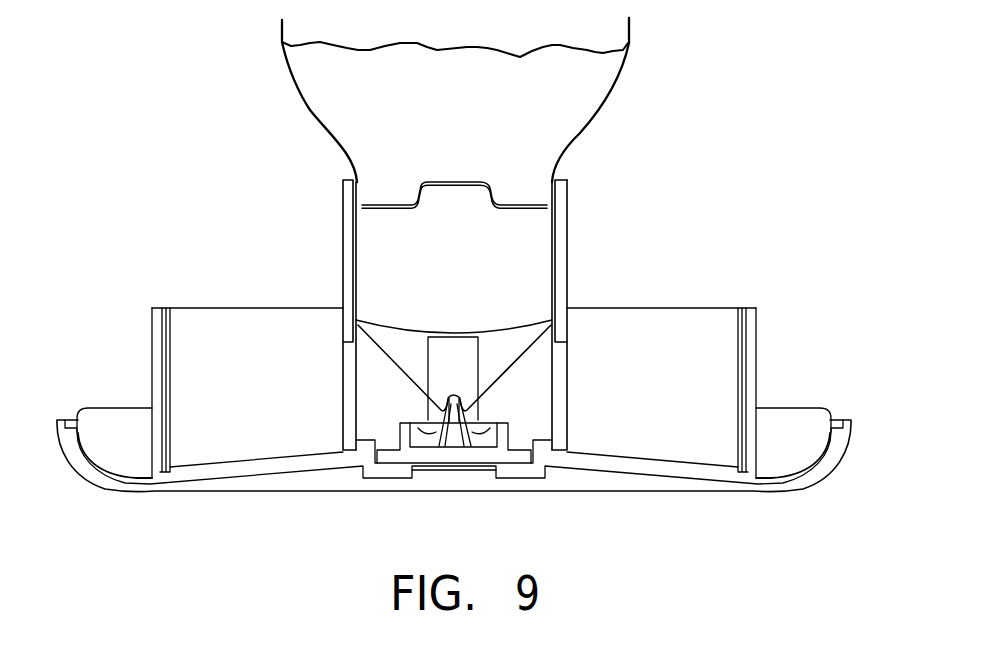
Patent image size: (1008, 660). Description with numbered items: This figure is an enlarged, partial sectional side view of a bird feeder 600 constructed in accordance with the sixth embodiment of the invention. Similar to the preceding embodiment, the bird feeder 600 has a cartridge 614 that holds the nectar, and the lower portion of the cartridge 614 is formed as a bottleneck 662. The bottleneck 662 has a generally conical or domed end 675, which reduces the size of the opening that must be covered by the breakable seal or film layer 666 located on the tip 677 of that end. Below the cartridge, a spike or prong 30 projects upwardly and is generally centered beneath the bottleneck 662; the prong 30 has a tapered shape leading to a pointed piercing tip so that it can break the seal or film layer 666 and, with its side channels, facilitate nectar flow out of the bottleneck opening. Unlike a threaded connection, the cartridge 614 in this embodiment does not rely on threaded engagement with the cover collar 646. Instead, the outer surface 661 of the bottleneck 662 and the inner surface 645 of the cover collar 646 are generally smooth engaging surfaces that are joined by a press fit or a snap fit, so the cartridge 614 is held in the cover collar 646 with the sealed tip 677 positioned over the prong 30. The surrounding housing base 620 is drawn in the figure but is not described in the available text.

The cartridge 614 is at (617, 75).
The bird feeder 600 is at (748, 137).
The bottleneck 662 is at (527, 222).
The outer surface of the bottleneck 661 is at (347, 248).
The cover collar 646 is at (562, 243).
The inner surface of the cover collar 645 is at (562, 287).
The conical or domed end 675 is at (428, 406).
The breakable seal or film layer 666 is at (468, 390).
The tip 677 is at (466, 408).
The prong 30 is at (462, 441).
The housing base 620 is at (754, 350).